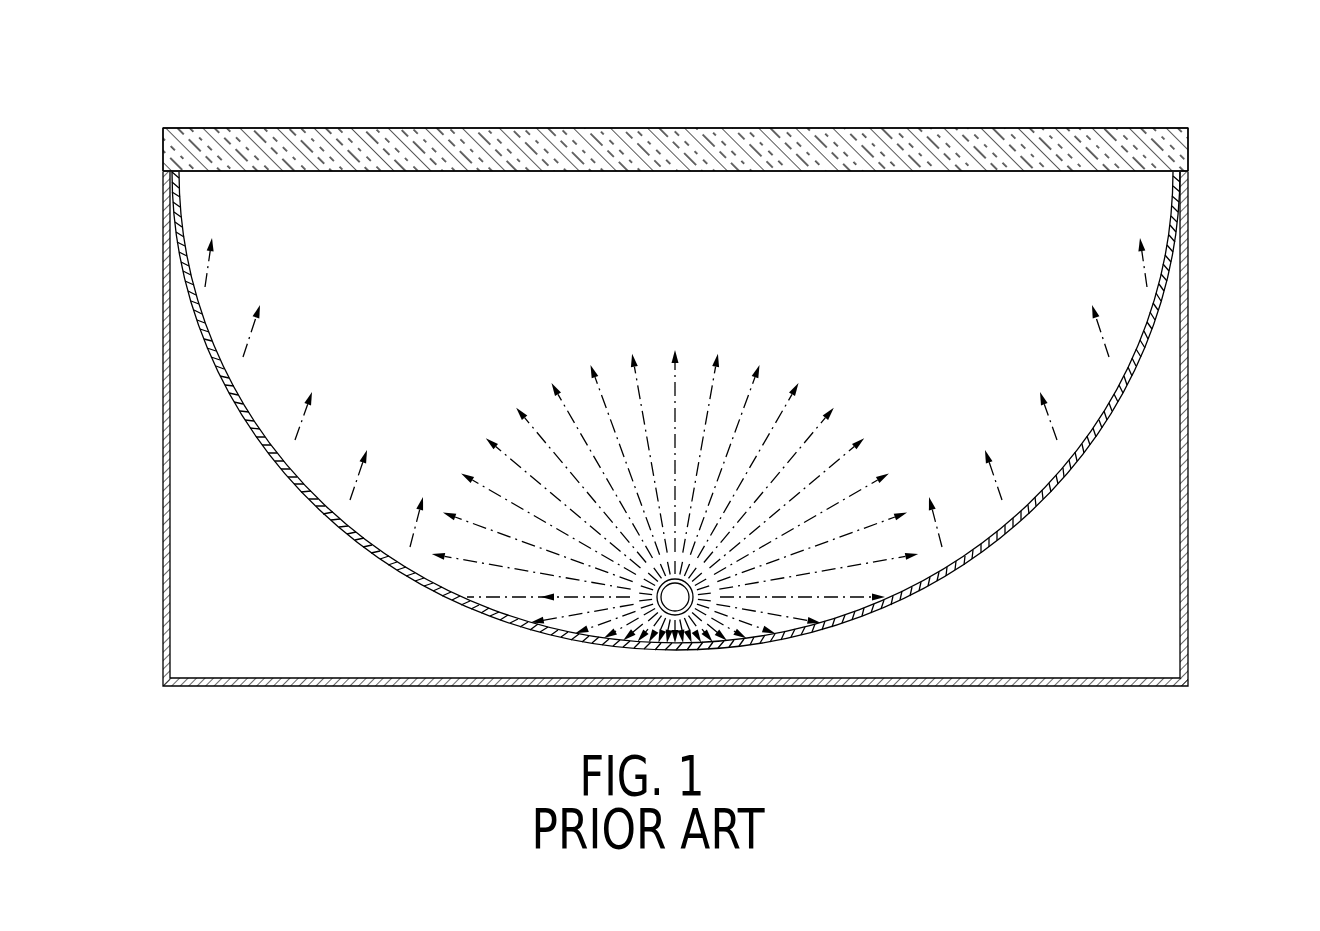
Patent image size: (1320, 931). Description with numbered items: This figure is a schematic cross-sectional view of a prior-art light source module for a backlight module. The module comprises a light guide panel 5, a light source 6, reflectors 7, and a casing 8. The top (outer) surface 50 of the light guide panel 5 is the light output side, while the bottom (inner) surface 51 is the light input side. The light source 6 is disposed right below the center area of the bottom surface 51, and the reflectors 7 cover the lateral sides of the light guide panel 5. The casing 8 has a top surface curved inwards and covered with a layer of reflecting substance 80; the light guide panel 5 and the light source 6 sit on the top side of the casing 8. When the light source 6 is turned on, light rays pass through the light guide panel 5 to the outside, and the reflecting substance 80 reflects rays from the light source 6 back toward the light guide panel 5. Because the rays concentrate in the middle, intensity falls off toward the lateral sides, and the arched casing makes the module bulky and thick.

The light guide panel 5 is at (876, 146).
The top surface 50 is at (626, 128).
The bottom surface 51 is at (997, 172).
The light source 6 is at (678, 596).
The reflectors 7 is at (163, 143).
The casing 8 is at (1163, 515).
The reflecting substance 80 is at (1112, 388).